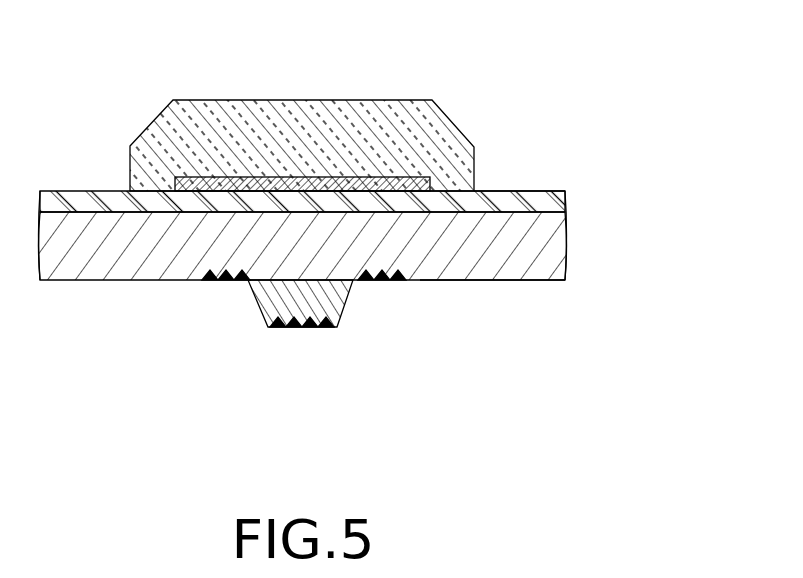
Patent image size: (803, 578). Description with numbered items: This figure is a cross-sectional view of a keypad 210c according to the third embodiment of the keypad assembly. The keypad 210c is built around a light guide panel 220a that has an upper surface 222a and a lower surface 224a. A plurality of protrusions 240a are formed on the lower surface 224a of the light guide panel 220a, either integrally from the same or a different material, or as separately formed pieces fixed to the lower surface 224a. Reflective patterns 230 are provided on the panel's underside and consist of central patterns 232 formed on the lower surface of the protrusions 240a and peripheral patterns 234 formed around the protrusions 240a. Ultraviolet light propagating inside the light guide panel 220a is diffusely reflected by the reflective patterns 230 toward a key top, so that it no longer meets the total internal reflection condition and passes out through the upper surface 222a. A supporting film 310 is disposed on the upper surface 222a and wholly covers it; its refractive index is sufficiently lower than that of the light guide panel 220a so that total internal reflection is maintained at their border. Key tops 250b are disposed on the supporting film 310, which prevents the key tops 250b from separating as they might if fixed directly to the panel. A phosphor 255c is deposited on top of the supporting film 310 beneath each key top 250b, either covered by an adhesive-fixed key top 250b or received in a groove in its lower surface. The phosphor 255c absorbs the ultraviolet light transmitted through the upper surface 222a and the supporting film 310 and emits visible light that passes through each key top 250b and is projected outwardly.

The keypad 210c is at (575, 182).
The light guide panel 220a is at (557, 272).
The upper surface of the light guide panel 222a is at (64, 191).
The lower surface of the light guide panel 224a is at (528, 282).
The reflective patterns 230 is at (407, 262).
The central patterns 232 is at (277, 328).
The peripheral patterns 234 is at (207, 280).
The protrusions 240a is at (348, 300).
The key tops 250b is at (302, 100).
The phosphor 255c is at (430, 191).
The supporting film 310 is at (525, 191).